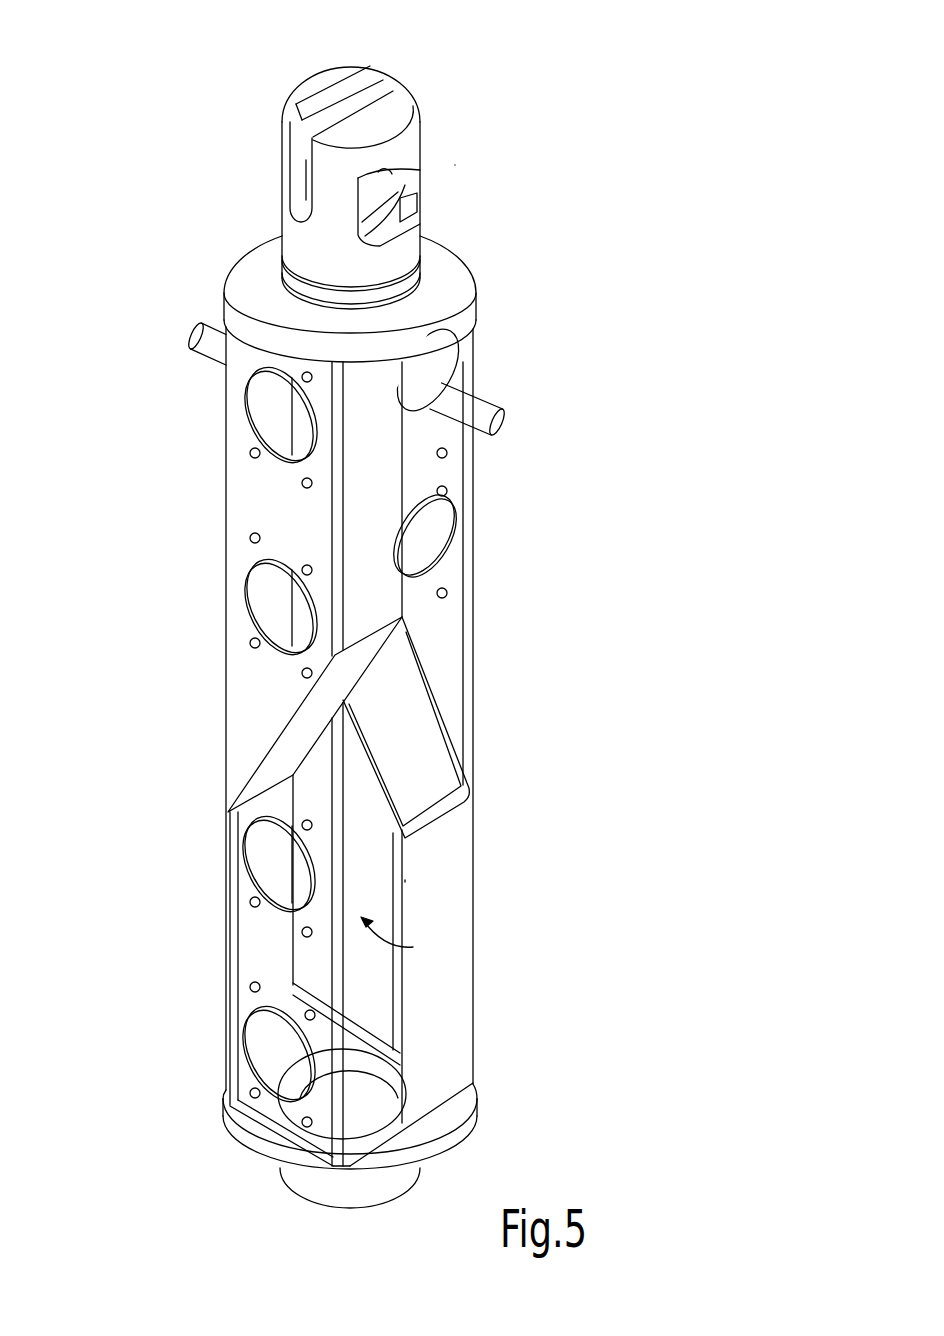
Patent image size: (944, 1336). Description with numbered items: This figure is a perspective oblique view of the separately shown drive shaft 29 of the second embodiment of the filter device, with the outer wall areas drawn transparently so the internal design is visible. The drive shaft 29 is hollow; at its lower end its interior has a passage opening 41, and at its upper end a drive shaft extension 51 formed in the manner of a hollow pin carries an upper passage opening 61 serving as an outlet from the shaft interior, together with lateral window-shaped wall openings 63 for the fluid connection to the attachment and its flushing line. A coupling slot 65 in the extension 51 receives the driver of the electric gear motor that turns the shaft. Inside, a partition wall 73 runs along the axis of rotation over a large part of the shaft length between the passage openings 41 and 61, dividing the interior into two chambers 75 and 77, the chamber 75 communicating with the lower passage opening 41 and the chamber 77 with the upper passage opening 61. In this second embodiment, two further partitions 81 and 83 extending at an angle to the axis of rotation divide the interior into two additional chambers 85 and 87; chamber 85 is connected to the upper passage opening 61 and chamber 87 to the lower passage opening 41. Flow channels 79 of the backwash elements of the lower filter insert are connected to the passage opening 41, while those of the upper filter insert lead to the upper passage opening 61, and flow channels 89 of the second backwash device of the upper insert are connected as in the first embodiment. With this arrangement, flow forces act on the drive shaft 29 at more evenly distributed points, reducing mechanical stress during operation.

The drive shaft 29 is at (472, 718).
The passage opening 41 is at (395, 1103).
The drive shaft extension 51 is at (455, 165).
The upper passage opening 61 is at (403, 218).
The window-shaped wall openings 63 is at (312, 163).
The coupling slot 65 is at (372, 92).
The partition wall 73 is at (405, 880).
The chamber 75 is at (318, 957).
The chamber 77 is at (433, 627).
The flow channels 79 is at (258, 422).
The partition 81 is at (306, 737).
The partition 83 is at (372, 713).
The chamber 85 is at (302, 613).
The chamber 87 is at (413, 947).
The flow channels 89 is at (440, 370).